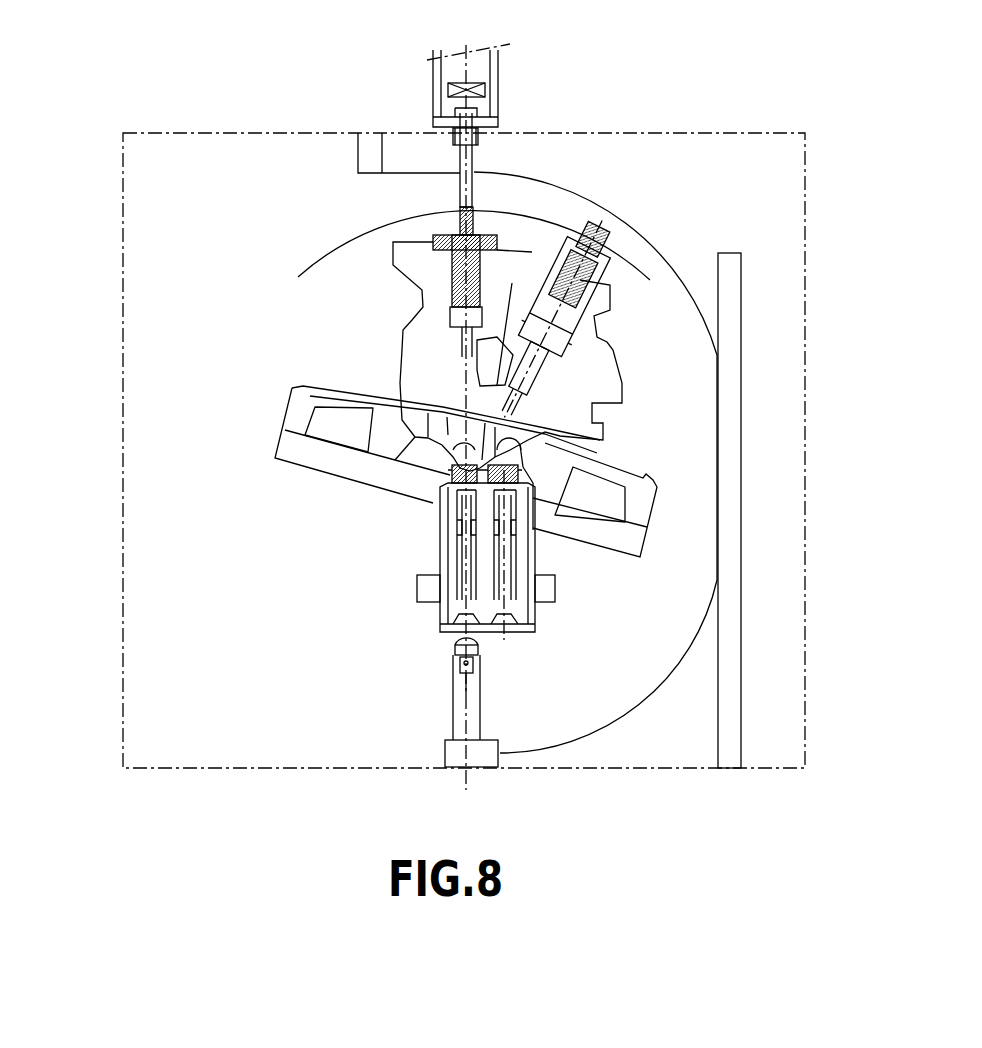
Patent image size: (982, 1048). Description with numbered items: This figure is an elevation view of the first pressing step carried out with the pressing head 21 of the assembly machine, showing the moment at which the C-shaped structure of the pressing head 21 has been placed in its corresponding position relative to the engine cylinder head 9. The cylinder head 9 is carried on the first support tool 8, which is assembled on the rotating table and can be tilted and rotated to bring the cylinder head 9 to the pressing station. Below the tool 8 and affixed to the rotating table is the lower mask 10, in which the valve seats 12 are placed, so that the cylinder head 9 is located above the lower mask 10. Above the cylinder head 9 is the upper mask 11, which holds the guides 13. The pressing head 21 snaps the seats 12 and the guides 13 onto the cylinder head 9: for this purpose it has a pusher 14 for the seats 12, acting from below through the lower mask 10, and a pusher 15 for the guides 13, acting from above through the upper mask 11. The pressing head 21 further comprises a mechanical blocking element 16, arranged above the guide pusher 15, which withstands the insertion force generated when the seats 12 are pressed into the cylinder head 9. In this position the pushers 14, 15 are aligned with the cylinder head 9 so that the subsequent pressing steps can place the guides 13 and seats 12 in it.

The first support tool 8 is at (302, 405).
The engine cylinder head 9 is at (423, 330).
The lower mask 10 is at (527, 588).
The upper mask 11 is at (598, 270).
The valve seats 12 is at (453, 470).
The guides 13 is at (463, 218).
The pusher for the seats 14 is at (460, 687).
The pusher for the guides 15 is at (470, 163).
The mechanical blocking element 16 is at (497, 108).
The pressing head 21 is at (612, 153).